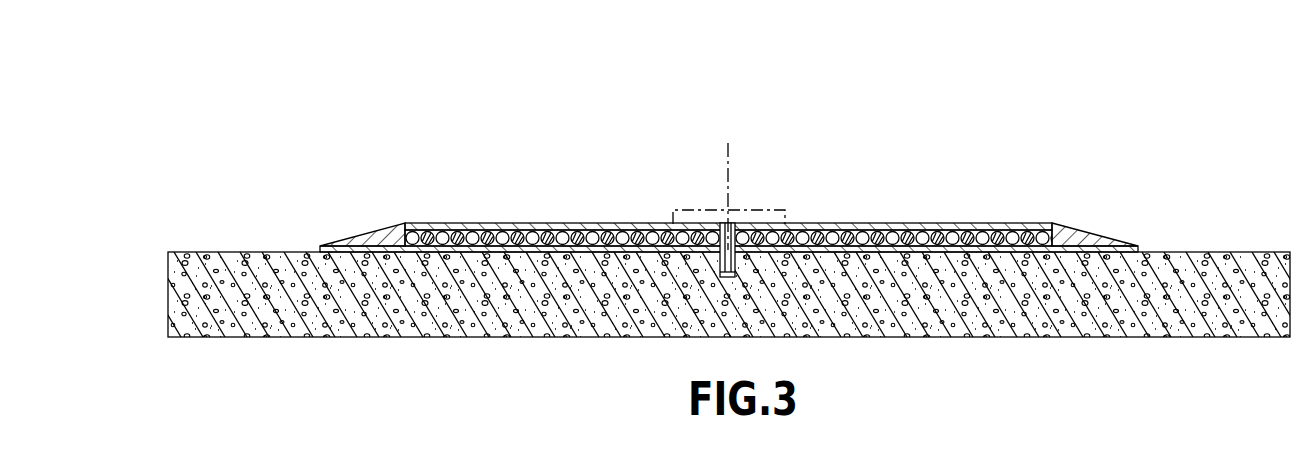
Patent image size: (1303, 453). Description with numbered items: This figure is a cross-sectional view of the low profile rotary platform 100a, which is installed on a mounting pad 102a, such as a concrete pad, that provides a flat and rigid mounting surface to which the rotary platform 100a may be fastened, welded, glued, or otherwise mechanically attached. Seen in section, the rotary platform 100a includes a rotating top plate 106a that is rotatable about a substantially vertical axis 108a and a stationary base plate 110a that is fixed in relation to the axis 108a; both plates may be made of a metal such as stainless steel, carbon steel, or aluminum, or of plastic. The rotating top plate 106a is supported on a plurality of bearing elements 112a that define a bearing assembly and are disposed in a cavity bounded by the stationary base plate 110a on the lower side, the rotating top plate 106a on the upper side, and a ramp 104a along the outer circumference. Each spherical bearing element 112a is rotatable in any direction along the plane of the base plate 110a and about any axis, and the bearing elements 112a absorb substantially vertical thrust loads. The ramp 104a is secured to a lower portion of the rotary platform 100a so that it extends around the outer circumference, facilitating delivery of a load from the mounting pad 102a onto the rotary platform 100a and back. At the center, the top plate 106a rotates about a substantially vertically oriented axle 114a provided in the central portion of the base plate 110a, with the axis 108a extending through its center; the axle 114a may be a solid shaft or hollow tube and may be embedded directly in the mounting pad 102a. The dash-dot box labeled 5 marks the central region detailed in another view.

The rotary platform 100a is at (688, 160).
The mounting pad 102a is at (168, 258).
The ramp 104a is at (351, 226).
The rotating top plate 106a is at (447, 224).
The vertical axis 108a is at (730, 168).
The stationary base plate 110a is at (334, 248).
The bearing elements 112a is at (468, 238).
The axle 114a is at (736, 243).
The section view indicator 5 is at (680, 201).